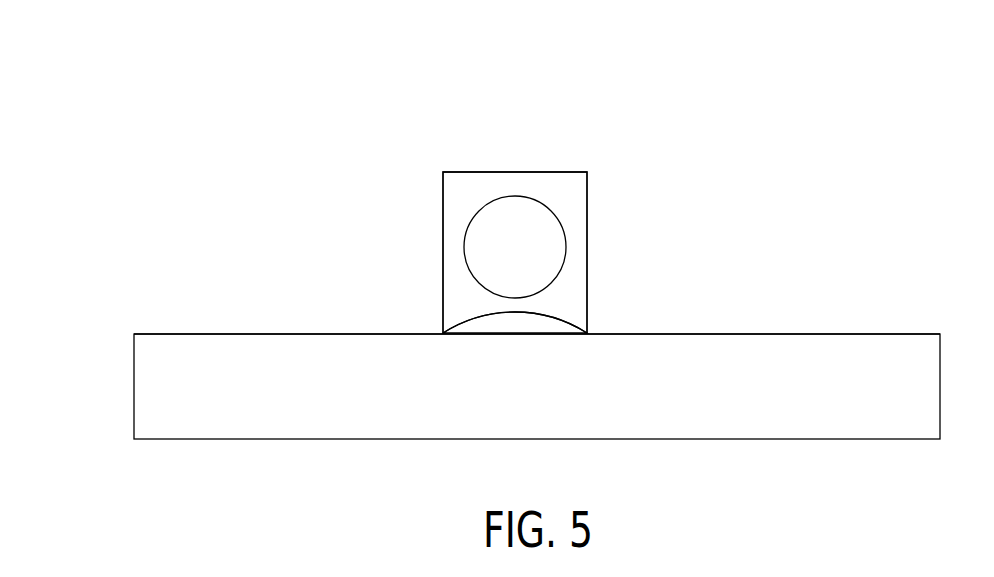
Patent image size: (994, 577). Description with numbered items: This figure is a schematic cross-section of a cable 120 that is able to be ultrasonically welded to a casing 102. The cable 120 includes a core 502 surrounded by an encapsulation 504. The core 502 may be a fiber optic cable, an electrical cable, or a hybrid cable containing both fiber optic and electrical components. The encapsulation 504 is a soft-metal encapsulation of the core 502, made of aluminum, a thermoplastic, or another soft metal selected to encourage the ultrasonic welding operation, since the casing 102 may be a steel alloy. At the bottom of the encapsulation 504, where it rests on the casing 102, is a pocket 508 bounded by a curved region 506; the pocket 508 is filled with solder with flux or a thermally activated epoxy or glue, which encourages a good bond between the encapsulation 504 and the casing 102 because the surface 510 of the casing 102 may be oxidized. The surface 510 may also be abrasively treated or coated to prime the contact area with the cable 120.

The casing 102 is at (768, 422).
The cable 120 is at (662, 146).
The core 502 is at (494, 198).
The encapsulation 504 is at (443, 218).
The curved bottom surface 506 is at (484, 313).
The pocket 508 is at (473, 327).
The surface 510 is at (226, 333).